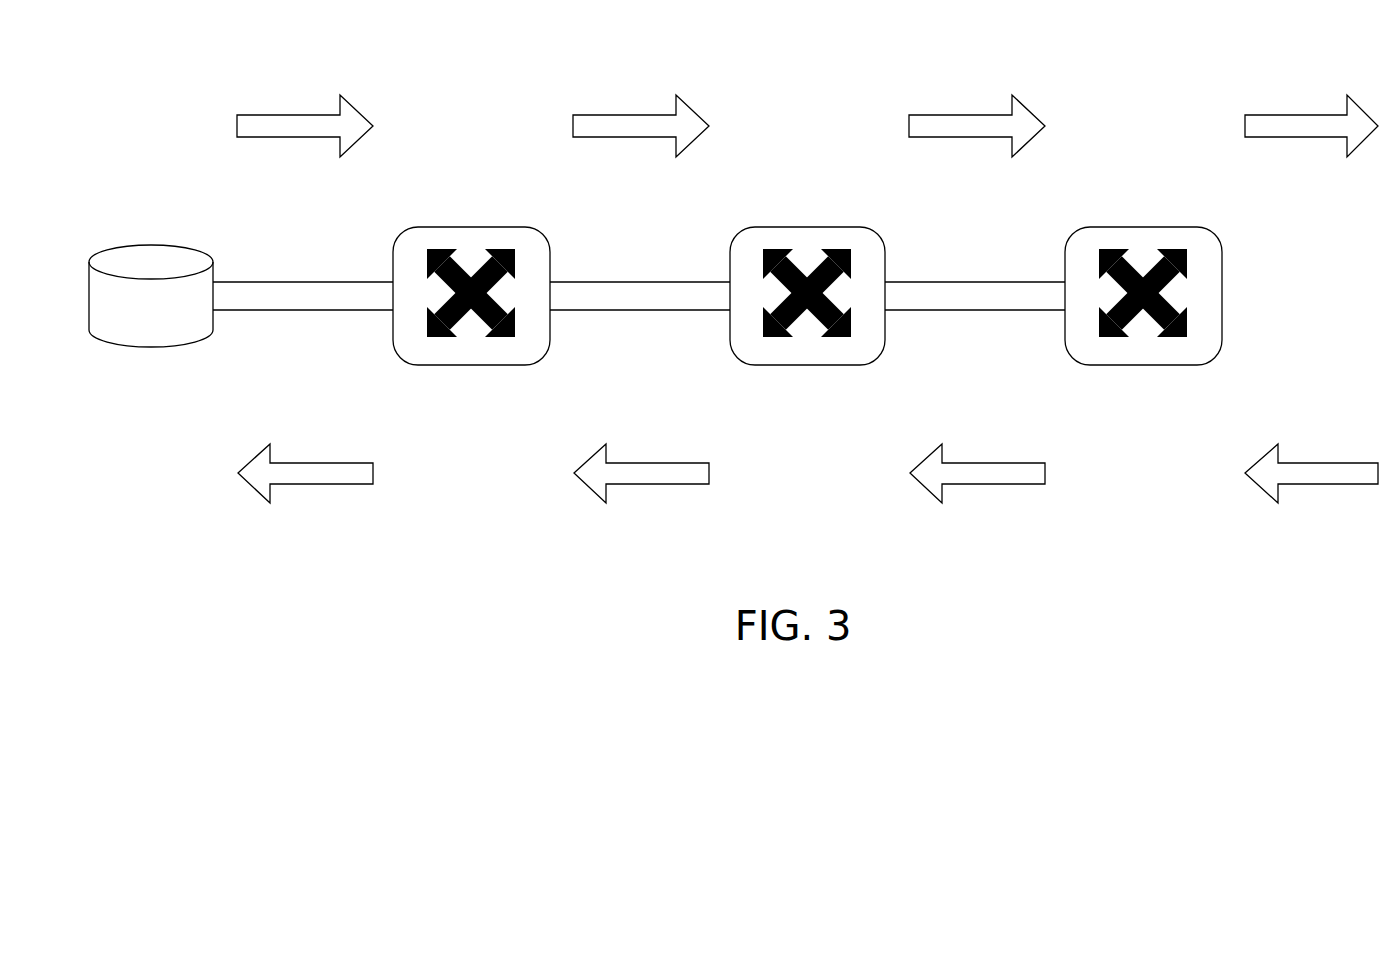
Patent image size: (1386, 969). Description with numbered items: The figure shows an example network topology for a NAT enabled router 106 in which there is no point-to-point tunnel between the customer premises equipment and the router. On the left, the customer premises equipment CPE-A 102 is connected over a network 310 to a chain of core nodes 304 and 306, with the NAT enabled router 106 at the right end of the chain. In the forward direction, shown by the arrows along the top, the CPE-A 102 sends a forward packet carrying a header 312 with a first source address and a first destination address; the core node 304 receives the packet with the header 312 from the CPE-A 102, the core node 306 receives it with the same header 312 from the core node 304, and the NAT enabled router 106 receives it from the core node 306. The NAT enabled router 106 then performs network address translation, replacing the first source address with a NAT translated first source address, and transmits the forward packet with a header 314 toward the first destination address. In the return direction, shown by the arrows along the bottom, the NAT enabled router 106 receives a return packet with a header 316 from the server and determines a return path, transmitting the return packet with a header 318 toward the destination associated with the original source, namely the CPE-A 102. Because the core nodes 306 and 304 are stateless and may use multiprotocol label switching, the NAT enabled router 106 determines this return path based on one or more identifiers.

The customer premises equipment CPE-A 102 is at (152, 244).
The network 310 is at (305, 281).
The core node 304 is at (470, 227).
The core node 306 is at (806, 227).
The NAT enabled router 106 is at (1142, 227).
The header of forward packet 312 is at (290, 115).
The header of NAT translated forward packet 314 is at (1298, 115).
The header of return packet on return path 318 is at (322, 485).
The header of return packet from server 316 is at (1328, 485).